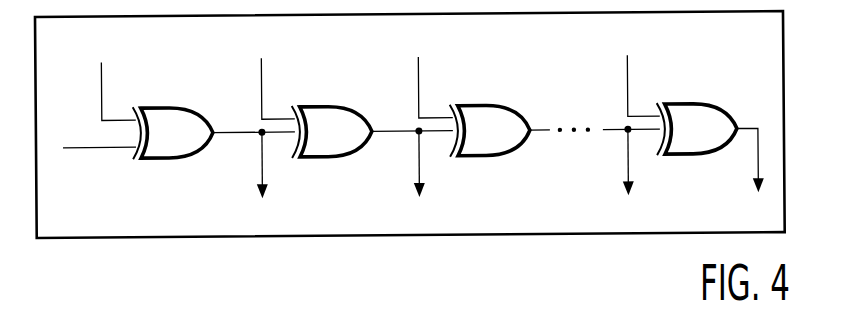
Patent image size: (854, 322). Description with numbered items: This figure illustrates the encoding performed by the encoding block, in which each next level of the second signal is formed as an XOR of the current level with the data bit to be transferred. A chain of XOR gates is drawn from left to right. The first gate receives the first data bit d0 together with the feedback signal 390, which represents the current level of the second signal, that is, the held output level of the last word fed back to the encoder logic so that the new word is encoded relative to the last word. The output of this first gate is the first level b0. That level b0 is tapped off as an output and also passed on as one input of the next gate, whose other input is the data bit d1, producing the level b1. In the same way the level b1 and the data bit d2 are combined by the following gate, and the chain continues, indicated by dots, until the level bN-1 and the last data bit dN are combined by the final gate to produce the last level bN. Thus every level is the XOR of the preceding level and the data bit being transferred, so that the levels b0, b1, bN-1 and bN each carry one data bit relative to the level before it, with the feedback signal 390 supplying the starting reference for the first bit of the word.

The feedback signal 390 is at (77, 148).
The first data bit d0 is at (114, 75).
The data bit d1 is at (273, 74).
The data bit d2 is at (431, 73).
The last data bit dN is at (637, 71).
The first level b0 is at (271, 181).
The level of the second signal b1 is at (428, 180).
The level of the second signal bN-1 is at (637, 178).
The last level bN is at (754, 177).